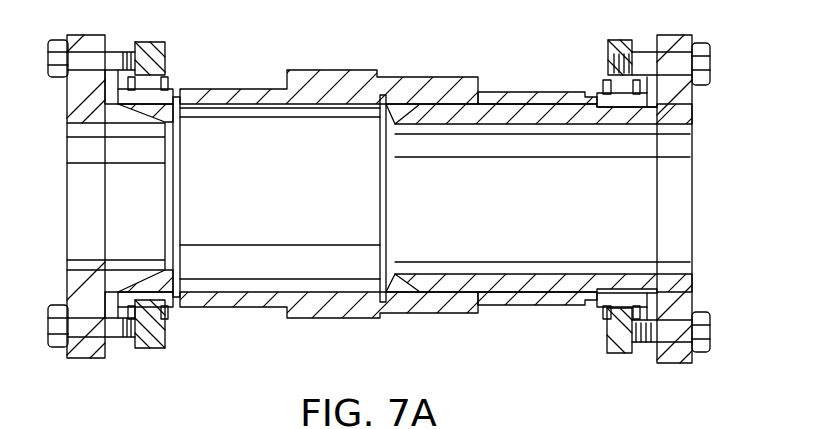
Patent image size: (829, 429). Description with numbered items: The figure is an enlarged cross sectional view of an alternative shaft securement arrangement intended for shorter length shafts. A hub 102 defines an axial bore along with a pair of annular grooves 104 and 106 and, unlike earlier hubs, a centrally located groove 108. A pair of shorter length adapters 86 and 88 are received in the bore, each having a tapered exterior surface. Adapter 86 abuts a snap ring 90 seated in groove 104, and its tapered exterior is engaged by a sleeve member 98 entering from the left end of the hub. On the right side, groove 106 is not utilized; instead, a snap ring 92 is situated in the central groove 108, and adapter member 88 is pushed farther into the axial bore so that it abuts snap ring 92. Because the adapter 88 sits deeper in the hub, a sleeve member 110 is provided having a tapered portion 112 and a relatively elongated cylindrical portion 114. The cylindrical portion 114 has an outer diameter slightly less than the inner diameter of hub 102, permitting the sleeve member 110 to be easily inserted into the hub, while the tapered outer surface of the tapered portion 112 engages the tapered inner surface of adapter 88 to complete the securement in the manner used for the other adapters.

The adapter 86 is at (143, 283).
The adapter member 88 is at (402, 120).
The snap ring 90 is at (180, 292).
The snap ring 92 is at (378, 104).
The sleeve member 98 is at (66, 93).
The hub 102 is at (532, 92).
The groove 104 is at (178, 297).
The groove 106 is at (575, 305).
The centrally located groove 108 is at (375, 102).
The sleeve member 110 is at (714, 112).
The tapered portion 112 is at (407, 290).
The cylindrical portion 114 is at (497, 306).